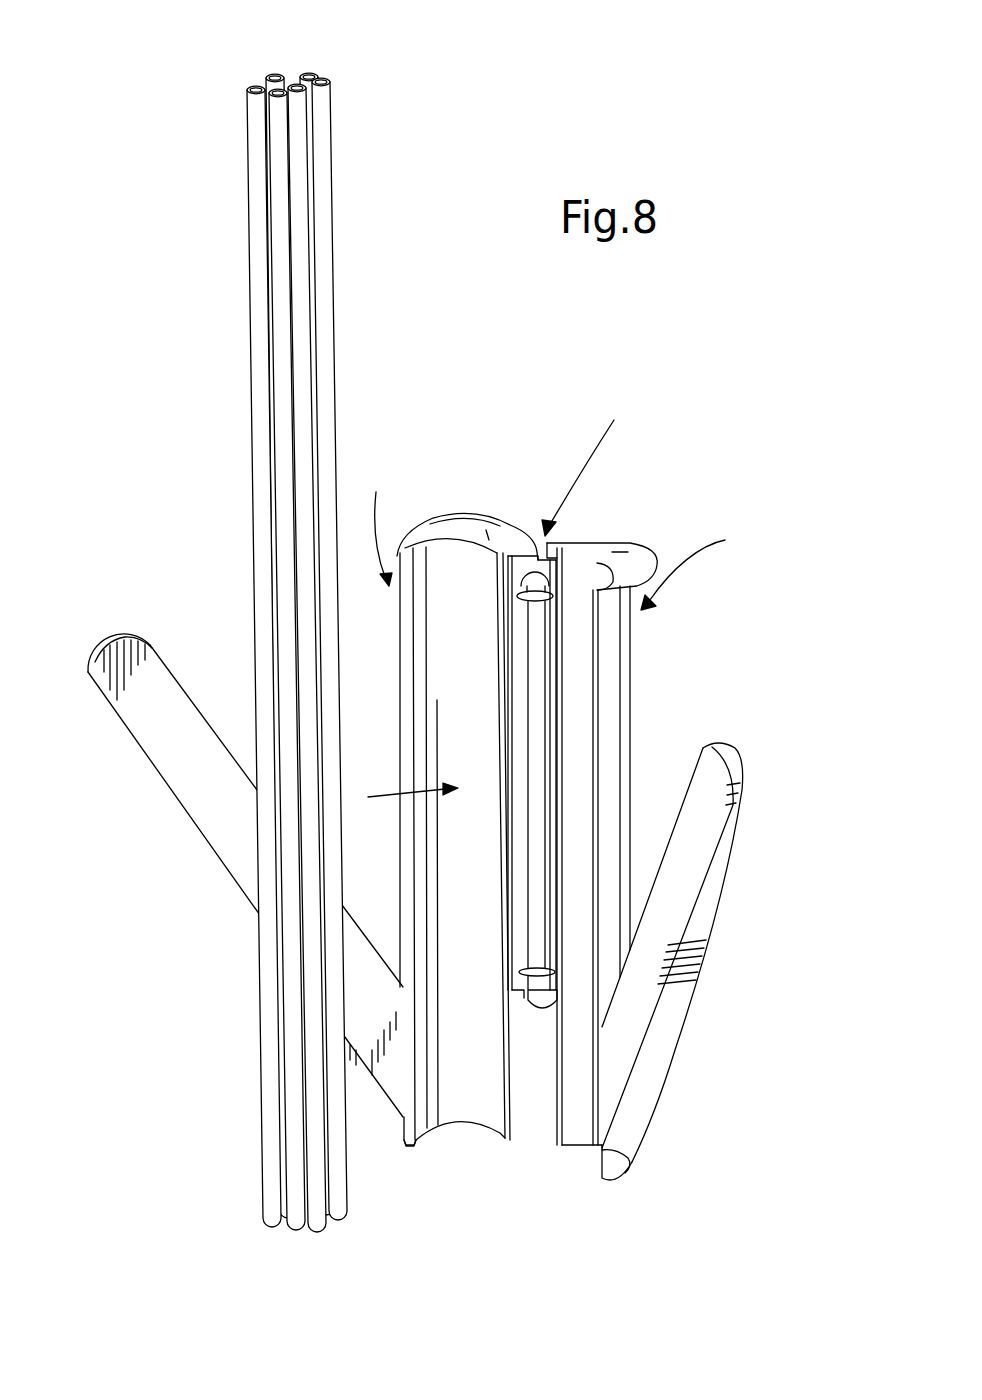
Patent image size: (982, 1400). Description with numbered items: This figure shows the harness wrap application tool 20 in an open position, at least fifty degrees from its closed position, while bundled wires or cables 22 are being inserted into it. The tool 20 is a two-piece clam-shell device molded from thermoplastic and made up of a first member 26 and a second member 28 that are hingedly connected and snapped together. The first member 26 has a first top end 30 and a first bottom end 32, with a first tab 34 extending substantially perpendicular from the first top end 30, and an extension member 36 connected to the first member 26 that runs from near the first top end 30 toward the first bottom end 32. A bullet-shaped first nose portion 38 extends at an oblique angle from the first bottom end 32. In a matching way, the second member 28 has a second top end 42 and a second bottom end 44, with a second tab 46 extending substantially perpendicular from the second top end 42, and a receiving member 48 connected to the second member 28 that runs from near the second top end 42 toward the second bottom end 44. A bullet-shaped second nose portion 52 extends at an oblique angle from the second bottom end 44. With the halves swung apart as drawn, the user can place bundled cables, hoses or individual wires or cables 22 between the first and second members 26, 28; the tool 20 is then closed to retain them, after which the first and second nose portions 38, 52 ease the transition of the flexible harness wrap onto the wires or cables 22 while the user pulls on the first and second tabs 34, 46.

The harness wrap application tool 20 is at (576, 688).
The wires or cables 22 is at (270, 78).
The first member 26 is at (632, 690).
The second member 28 is at (405, 703).
The first top end 30 is at (700, 557).
The first bottom end 32 is at (616, 1183).
The first tab 34 is at (612, 553).
The extension member 36 is at (541, 1014).
The first nose portion 38 is at (738, 757).
The second top end 42 is at (372, 520).
The second bottom end 44 is at (412, 1144).
The second tab 46 is at (470, 522).
The receiving member 48 is at (523, 998).
The second nose portion 52 is at (128, 632).